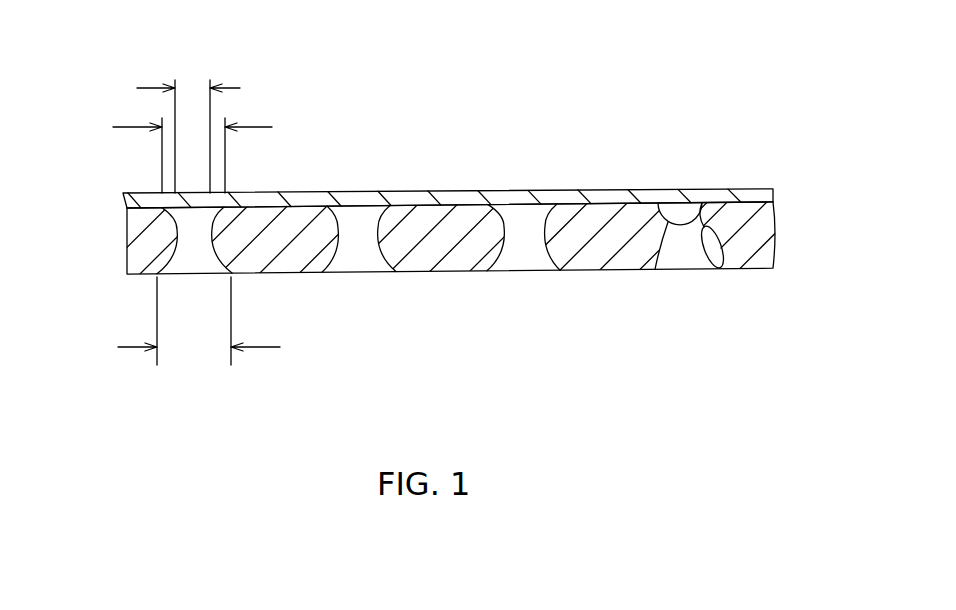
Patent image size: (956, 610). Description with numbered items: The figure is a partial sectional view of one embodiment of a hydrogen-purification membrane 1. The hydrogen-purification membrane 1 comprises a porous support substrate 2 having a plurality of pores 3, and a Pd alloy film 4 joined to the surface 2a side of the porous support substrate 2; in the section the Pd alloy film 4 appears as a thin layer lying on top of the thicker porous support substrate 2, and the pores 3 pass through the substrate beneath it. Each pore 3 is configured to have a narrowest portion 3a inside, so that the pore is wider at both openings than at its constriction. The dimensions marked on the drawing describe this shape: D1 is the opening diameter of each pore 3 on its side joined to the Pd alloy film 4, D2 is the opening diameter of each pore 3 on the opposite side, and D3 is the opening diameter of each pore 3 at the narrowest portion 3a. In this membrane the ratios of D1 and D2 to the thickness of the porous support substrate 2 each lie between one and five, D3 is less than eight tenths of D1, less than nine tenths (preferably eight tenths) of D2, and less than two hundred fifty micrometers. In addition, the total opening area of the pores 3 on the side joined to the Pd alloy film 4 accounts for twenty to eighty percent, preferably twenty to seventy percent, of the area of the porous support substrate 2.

The hydrogen-purification membrane 1 is at (580, 114).
The porous support substrate 2 is at (762, 232).
The surface 2a is at (757, 196).
The pore 3 is at (178, 240).
The narrowest portion 3a is at (162, 252).
The Pd alloy film 4 is at (470, 198).
The opening diameter D1 is at (217, 127).
The opening diameter D2 is at (200, 333).
The opening diameter D3 is at (195, 90).